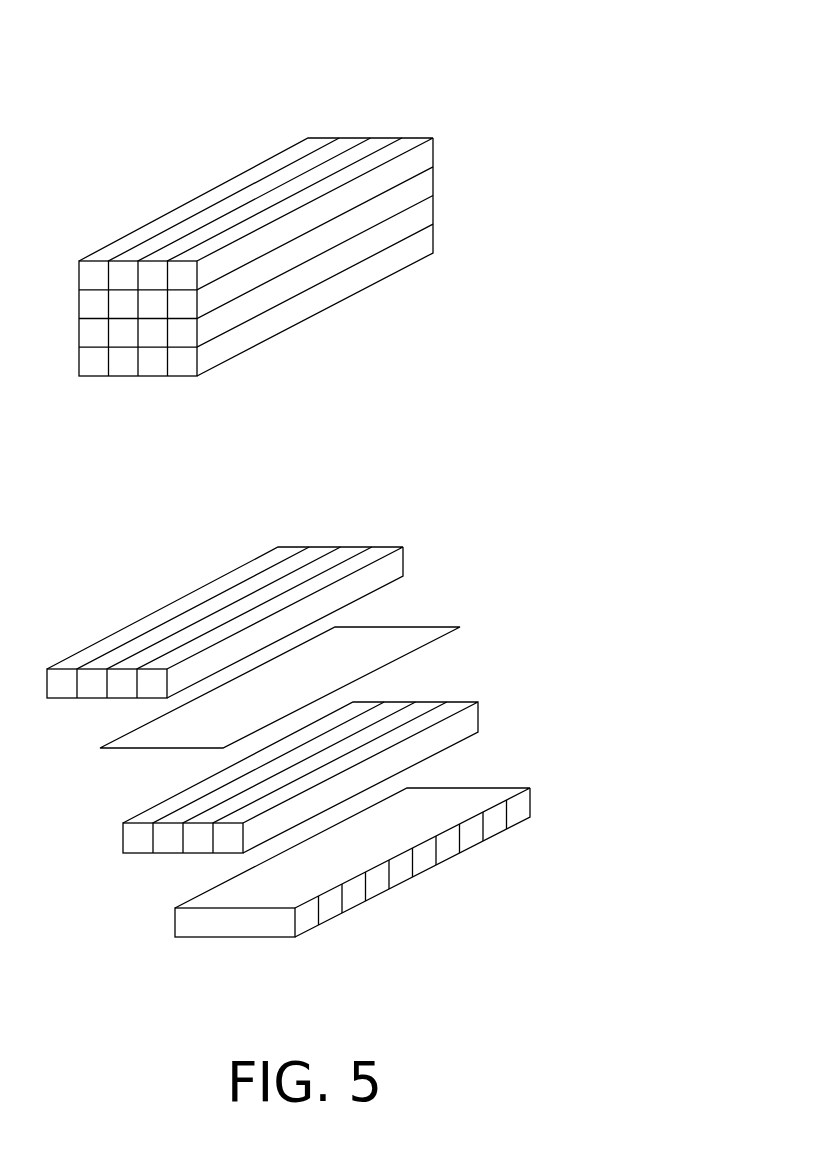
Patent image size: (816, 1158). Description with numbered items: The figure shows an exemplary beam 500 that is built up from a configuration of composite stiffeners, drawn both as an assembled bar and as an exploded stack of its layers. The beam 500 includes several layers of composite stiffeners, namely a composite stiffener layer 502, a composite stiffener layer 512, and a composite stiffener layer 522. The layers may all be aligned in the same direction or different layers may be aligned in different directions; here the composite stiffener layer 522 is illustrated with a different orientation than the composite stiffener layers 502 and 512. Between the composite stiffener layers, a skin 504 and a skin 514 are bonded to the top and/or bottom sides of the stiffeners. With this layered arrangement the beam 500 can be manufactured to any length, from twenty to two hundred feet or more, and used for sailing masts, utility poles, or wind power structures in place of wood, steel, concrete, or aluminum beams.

The beam 500 is at (366, 63).
The composite stiffener layer 502 is at (366, 529).
The skin 504 is at (383, 637).
The composite stiffener layer 512 is at (456, 691).
The skin 514 is at (381, 837).
The composite stiffener layer 522 is at (471, 885).